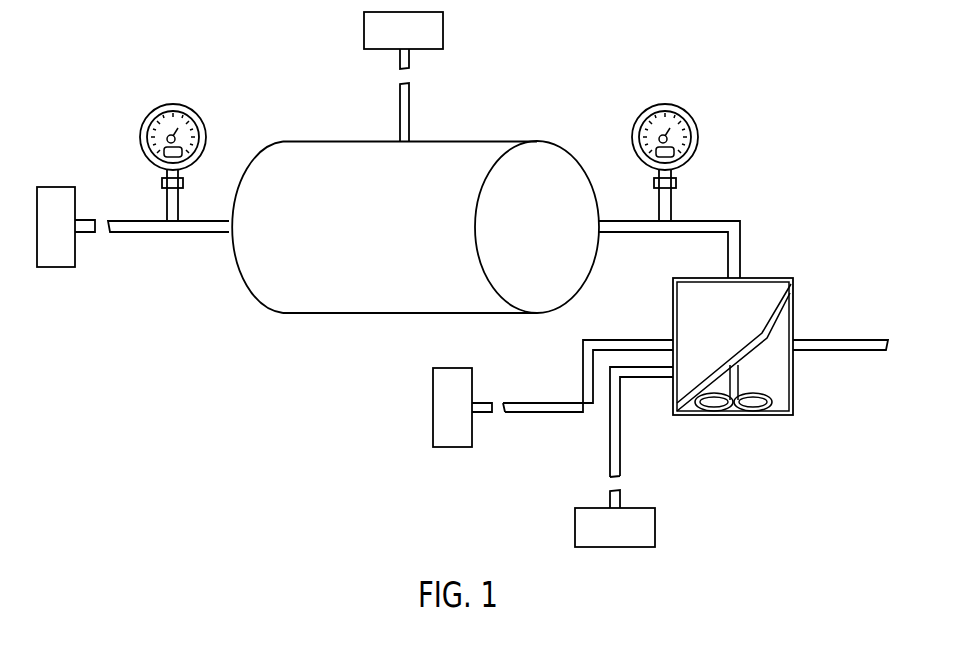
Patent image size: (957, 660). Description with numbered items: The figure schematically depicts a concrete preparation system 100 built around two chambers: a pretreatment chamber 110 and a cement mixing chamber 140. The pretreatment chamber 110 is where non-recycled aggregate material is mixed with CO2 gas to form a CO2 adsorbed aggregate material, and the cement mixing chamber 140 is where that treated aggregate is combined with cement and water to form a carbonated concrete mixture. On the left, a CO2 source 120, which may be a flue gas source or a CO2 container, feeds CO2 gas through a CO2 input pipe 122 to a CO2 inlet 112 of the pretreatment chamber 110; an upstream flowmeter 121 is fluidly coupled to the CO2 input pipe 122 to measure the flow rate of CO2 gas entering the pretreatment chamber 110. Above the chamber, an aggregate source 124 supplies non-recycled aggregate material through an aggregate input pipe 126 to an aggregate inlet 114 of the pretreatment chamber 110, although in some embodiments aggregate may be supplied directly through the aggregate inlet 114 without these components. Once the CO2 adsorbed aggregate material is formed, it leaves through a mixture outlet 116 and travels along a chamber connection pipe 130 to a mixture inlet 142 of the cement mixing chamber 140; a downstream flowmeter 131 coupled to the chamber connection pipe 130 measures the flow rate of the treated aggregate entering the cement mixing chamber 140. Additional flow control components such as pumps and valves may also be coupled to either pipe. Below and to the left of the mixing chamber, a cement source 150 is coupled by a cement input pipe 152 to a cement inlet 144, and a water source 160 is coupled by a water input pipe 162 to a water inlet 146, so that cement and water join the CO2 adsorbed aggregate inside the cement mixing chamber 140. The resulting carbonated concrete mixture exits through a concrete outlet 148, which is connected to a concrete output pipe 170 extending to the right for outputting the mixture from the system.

The concrete preparation system 100 is at (760, 93).
The pretreatment chamber 110 is at (491, 141).
The CO2 inlet 112 is at (229, 242).
The aggregate inlet 114 is at (398, 140).
The mixture outlet 116 is at (600, 217).
The CO2 source 120 is at (55, 269).
The upstream flowmeter 121 is at (174, 103).
The CO2 input pipe 122 is at (125, 234).
The aggregate source 124 is at (444, 24).
The aggregate input pipe 126 is at (400, 100).
The chamber connection pipe 130 is at (618, 236).
The downstream flowmeter 131 is at (667, 104).
The cement mixing chamber 140 is at (780, 278).
The mixture inlet 142 is at (727, 278).
The cement inlet 144 is at (672, 340).
The water inlet 146 is at (672, 378).
The concrete outlet 148 is at (800, 332).
The cement source 150 is at (452, 449).
The cement input pipe 152 is at (525, 414).
The water source 160 is at (656, 530).
The water input pipe 162 is at (608, 438).
The concrete output pipe 170 is at (852, 338).